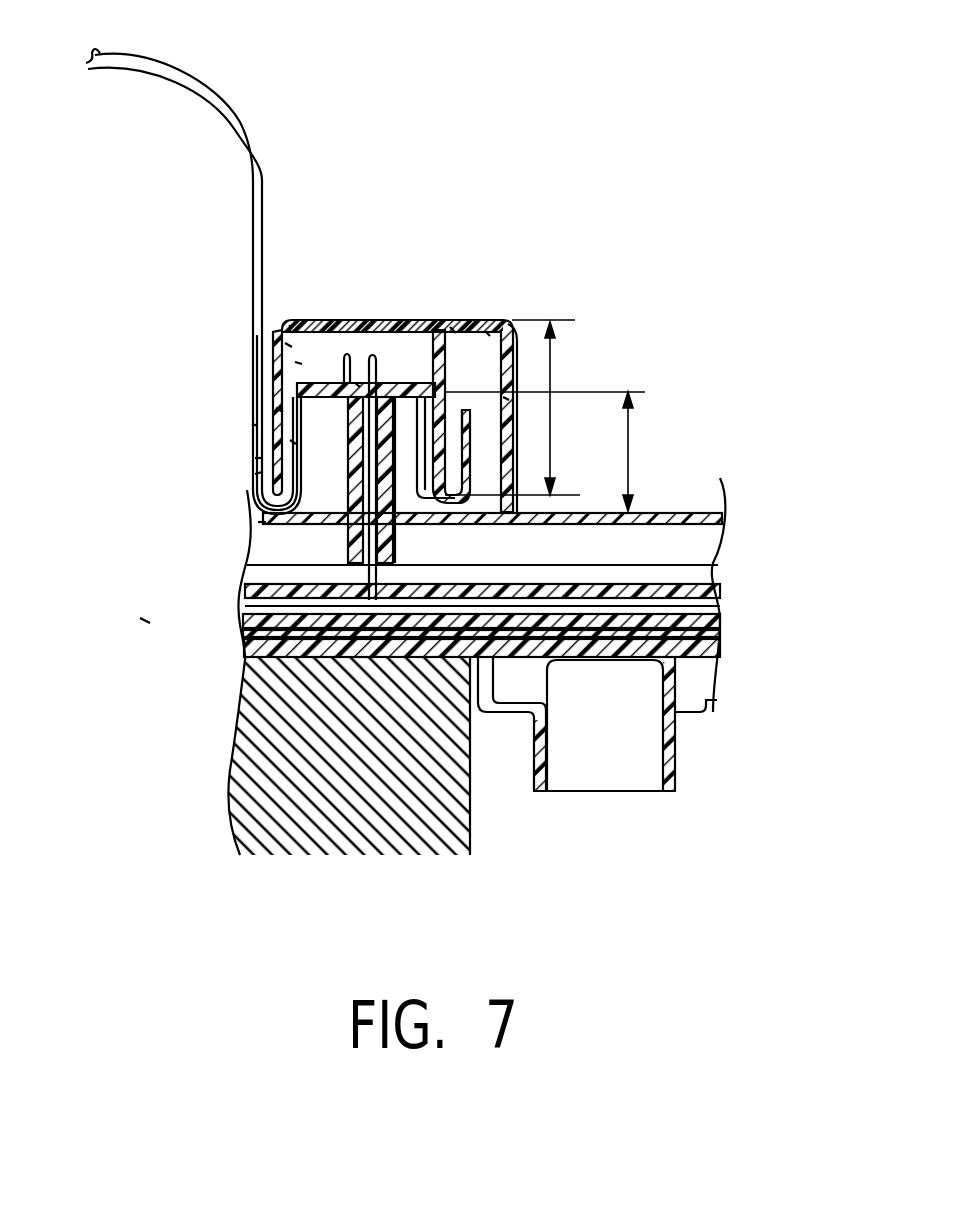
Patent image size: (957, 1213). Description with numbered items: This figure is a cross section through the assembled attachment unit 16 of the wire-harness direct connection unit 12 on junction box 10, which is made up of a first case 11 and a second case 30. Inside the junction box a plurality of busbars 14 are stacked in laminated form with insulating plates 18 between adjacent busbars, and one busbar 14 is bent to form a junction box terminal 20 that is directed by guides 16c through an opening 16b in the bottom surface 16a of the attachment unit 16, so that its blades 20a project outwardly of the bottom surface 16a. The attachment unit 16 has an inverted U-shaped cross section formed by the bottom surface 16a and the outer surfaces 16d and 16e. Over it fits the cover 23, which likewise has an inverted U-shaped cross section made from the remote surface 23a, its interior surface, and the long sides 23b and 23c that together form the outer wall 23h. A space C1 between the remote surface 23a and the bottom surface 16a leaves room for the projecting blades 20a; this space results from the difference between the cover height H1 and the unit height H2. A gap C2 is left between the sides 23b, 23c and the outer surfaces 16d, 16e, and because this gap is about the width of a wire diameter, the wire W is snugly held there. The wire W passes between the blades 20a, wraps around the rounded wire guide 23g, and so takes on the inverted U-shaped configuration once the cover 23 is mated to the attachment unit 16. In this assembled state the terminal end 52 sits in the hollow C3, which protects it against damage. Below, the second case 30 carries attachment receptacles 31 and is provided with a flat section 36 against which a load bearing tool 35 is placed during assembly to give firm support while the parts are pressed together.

The wire W is at (193, 76).
The junction box 10 is at (132, 620).
The first case 11 is at (722, 512).
The direct connection unit 12 is at (355, 303).
The busbar 14 is at (720, 635).
The attachment unit 16 is at (258, 473).
The bottom surface 16a is at (280, 410).
The opening 16b is at (290, 345).
The guides 16c is at (258, 458).
The outer surface 16d is at (470, 440).
The outer surface 16e is at (255, 425).
The insulating plates 18 is at (710, 592).
The junction box terminal 20 is at (363, 547).
The blades 20a is at (350, 356).
The cover 23 is at (422, 300).
The remote surface 23a is at (290, 330).
The long side 23b is at (488, 335).
The long side 23c is at (292, 442).
The rounded wire guide 23g is at (262, 522).
The outer wall 23h is at (517, 393).
The second case 30 is at (717, 712).
The attachment receptacles 31 is at (677, 790).
The load bearing tool 35 is at (463, 837).
The flat section 36 is at (358, 657).
The terminal end 52 is at (523, 322).
The space C1 is at (360, 387).
The gap C2 is at (300, 362).
The hollow C3 is at (453, 327).
The cover height H1 is at (523, 407).
The unit height H2 is at (562, 451).